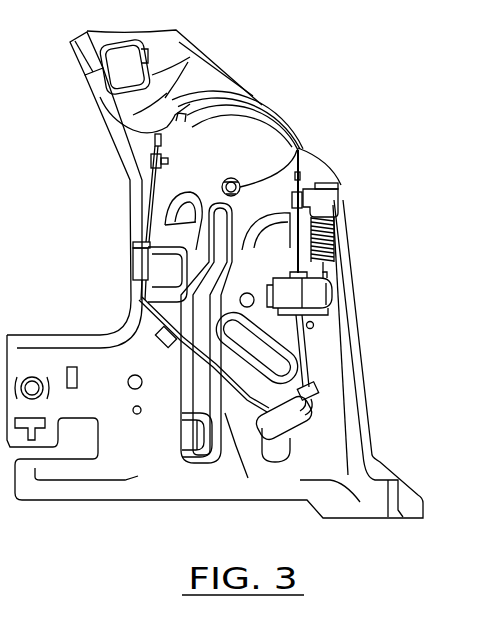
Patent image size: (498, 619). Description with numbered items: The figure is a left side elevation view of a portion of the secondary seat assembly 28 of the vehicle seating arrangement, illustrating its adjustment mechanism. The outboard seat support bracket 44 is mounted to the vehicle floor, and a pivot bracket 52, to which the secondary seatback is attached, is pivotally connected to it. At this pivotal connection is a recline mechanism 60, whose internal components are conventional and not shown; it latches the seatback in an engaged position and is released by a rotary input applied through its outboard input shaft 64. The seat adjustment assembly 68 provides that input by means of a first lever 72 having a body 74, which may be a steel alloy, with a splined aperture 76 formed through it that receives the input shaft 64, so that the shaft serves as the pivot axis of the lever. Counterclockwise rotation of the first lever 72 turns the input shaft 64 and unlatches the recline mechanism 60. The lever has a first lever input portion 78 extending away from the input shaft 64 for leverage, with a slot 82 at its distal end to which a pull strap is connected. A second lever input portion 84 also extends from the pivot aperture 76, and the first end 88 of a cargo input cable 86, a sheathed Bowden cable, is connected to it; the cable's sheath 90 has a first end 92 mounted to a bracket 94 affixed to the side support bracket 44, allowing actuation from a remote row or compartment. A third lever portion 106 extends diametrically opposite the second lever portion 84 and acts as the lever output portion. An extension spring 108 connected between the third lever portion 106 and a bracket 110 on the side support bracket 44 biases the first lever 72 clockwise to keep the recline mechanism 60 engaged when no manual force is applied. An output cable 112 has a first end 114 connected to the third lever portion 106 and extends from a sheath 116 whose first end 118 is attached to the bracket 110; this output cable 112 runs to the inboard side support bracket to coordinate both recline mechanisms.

The secondary seat assembly 28 is at (344, 86).
The seat support bracket 44 is at (103, 455).
The pivot bracket 52 is at (208, 88).
The recline mechanism 60 is at (268, 222).
The outboard input shaft 64 is at (236, 180).
The seat adjustment assembly 68 is at (193, 174).
The first lever 72 is at (224, 146).
The body 74 is at (200, 185).
The splined aperture 76 is at (291, 165).
The first lever input portion 78 is at (197, 403).
The slot 82 is at (205, 452).
The second lever input portion 84 is at (148, 163).
The cargo input cable 86 is at (150, 329).
The first end 88 is at (157, 137).
The sheath 90 is at (135, 300).
The first end 92 is at (140, 243).
The bracket 94 is at (162, 275).
The third lever portion 106 is at (317, 203).
The extension spring 108 is at (330, 228).
The bracket 110 is at (322, 296).
The output cable 112 is at (308, 370).
The first end 114 is at (302, 190).
The sheath 116 is at (317, 410).
The first end 118 is at (304, 301).